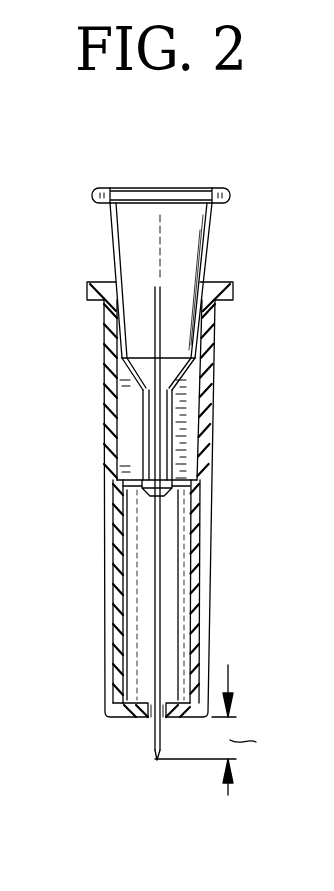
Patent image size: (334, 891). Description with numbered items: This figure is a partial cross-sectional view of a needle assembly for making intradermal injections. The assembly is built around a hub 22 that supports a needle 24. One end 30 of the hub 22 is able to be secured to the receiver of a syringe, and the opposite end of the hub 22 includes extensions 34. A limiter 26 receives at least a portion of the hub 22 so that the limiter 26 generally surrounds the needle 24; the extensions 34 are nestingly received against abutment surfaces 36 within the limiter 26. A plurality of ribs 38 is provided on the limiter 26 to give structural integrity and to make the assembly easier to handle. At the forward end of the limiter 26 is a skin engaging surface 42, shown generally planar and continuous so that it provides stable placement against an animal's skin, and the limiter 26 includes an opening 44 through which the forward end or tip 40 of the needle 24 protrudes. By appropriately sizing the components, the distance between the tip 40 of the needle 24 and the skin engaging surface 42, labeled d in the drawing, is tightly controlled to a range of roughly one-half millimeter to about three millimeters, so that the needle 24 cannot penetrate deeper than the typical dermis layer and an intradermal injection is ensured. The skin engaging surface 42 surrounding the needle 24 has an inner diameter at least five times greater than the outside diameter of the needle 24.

The end of hub 30 is at (86, 164).
The hub 22 is at (192, 267).
The extensions 34 is at (133, 438).
The needle 24 is at (156, 595).
The abutment surfaces 36 is at (120, 459).
The ribs 38 is at (202, 652).
The limiter 26 is at (120, 638).
The skin engaging surface 42 is at (118, 718).
The opening 44 is at (152, 710).
The forward end or tip of needle 40 is at (154, 760).